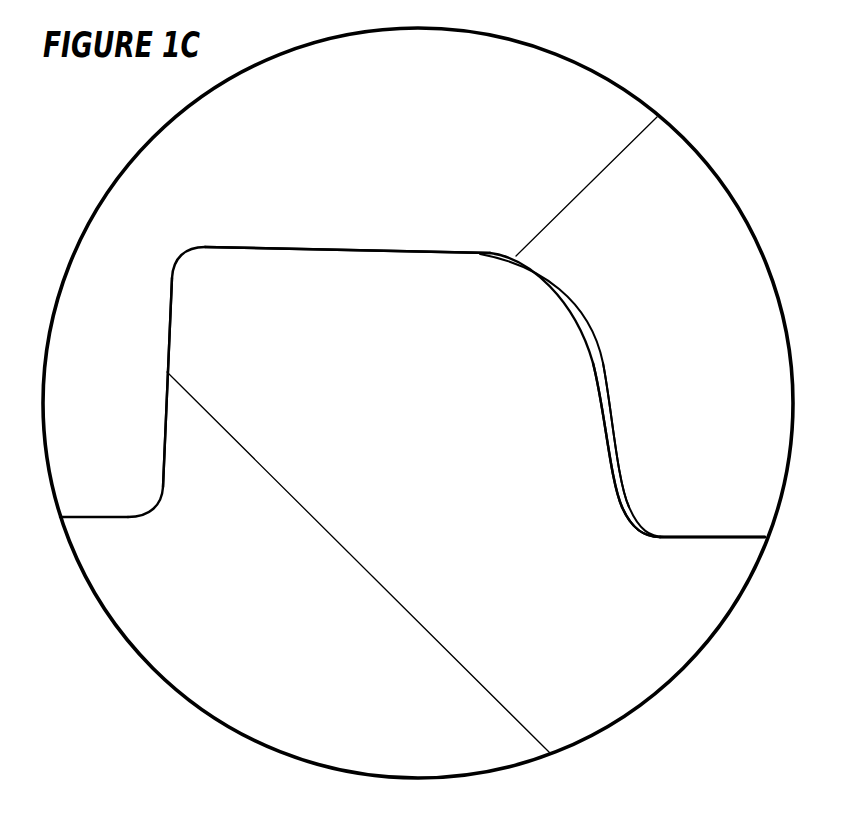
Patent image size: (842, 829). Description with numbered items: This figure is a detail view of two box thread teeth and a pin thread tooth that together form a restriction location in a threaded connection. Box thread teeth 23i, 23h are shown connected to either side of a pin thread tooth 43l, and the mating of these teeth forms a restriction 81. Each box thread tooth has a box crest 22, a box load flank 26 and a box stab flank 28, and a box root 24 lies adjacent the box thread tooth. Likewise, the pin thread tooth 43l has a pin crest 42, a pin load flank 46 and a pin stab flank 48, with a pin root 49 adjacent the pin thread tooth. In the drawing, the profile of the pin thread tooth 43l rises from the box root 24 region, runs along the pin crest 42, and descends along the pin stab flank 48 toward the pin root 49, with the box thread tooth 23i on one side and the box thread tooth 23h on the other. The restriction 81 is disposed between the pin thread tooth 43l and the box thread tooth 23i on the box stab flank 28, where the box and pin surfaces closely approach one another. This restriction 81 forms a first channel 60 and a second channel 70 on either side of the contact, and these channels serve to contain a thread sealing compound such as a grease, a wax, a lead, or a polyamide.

The box crest 22 is at (738, 538).
The box thread tooth 23h is at (105, 521).
The box thread tooth 23i is at (710, 541).
The box root 24 is at (346, 253).
The box load flank 26 is at (167, 420).
The box stab flank 28 is at (600, 393).
The pin crest 42 is at (333, 250).
The pin thread tooth 43l is at (379, 249).
The pin load flank 46 is at (165, 434).
The pin stab flank 48 is at (609, 385).
The pin root 49 is at (734, 537).
The first channel 60 is at (582, 300).
The second channel 70 is at (621, 508).
The restriction 81 is at (606, 435).